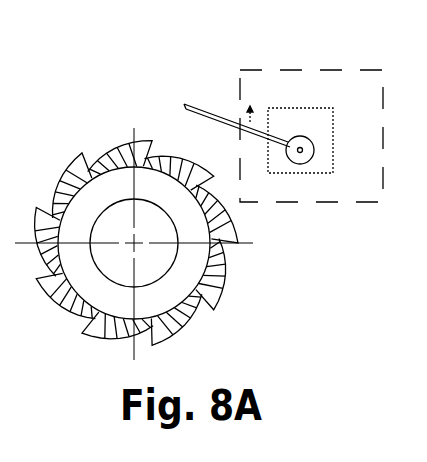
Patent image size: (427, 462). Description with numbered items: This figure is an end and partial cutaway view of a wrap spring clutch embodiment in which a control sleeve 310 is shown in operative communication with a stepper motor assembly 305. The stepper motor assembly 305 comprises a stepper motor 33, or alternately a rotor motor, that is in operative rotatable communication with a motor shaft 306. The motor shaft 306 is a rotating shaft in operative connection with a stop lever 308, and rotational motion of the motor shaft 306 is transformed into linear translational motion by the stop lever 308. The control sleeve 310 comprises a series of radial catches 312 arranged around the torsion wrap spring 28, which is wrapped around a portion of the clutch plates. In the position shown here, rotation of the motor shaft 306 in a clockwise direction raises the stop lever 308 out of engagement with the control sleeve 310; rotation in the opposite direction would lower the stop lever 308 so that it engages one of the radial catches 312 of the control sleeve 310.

The torsion wrap spring 28 is at (53, 222).
The stepper motor 33 is at (298, 108).
The stepper motor assembly 305 is at (383, 70).
The motor shaft 306 is at (314, 148).
The stop lever 308 is at (183, 104).
The control sleeve 310 is at (113, 142).
The radial catches 312 is at (150, 152).